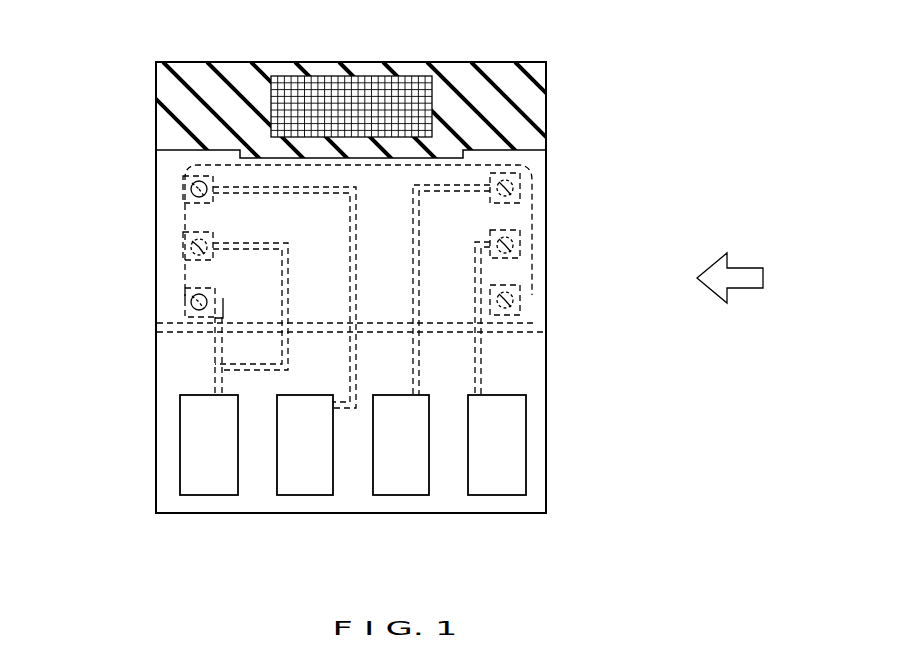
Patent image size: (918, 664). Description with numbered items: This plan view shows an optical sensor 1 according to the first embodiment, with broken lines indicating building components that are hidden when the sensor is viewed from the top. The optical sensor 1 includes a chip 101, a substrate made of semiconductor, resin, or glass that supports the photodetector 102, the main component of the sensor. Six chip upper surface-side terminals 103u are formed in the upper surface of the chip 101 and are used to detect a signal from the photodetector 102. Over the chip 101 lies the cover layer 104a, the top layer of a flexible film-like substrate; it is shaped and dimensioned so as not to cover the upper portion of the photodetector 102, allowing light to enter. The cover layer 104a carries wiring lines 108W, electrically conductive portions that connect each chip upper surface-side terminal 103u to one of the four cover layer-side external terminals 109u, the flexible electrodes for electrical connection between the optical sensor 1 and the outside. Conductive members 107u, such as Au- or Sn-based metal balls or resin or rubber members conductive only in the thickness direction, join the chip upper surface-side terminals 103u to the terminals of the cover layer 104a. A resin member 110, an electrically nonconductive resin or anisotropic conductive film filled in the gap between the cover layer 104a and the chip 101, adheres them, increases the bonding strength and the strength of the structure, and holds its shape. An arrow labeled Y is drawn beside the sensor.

The optical sensor 1 is at (122, 532).
The chip 101 is at (509, 83).
The photodetector 102 is at (353, 75).
The chip upper surface-side terminal 103u is at (191, 190).
The cover layer 104a is at (157, 440).
The conductive member 107u is at (185, 177).
The wiring line 108W is at (218, 380).
The cover layer-side external terminal 109u is at (208, 487).
The resin member 110 is at (157, 324).
The direction Y is at (745, 268).